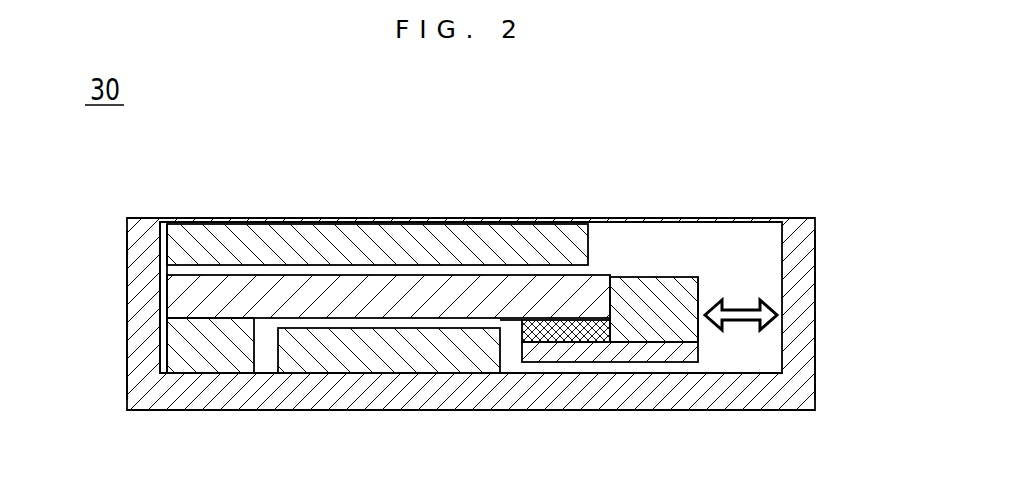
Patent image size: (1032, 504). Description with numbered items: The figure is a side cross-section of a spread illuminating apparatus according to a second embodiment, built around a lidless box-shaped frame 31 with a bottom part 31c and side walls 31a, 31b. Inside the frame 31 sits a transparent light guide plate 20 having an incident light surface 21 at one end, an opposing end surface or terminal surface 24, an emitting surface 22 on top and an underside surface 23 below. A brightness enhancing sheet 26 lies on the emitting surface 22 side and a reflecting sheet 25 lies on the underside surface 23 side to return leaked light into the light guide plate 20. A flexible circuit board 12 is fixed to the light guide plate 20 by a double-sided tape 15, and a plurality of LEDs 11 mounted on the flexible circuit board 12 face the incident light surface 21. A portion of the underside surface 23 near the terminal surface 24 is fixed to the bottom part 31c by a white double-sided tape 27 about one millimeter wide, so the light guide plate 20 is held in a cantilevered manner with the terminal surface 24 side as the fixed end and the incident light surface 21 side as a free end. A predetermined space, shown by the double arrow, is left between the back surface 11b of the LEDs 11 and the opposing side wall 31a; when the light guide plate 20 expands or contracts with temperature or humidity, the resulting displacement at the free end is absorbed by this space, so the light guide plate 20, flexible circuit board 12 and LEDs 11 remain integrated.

The frame 31 is at (750, 218).
The side wall 31a is at (800, 275).
The side wall 31b is at (140, 322).
The bottom part 31c is at (743, 388).
The end surface 24 is at (165, 298).
The brightness enhancing sheet 26 is at (437, 240).
The emitting surface 22 is at (307, 275).
The double-sided tape 27 is at (210, 350).
The reflecting sheet 25 is at (377, 350).
The double-sided tape 15 is at (572, 330).
The LEDs 11 is at (670, 290).
The back surface 11b is at (700, 292).
The flexible circuit board 12 is at (645, 350).
The underside surface 23 is at (515, 320).
The light guide plate 20 is at (603, 290).
The incident light surface 21 is at (627, 290).